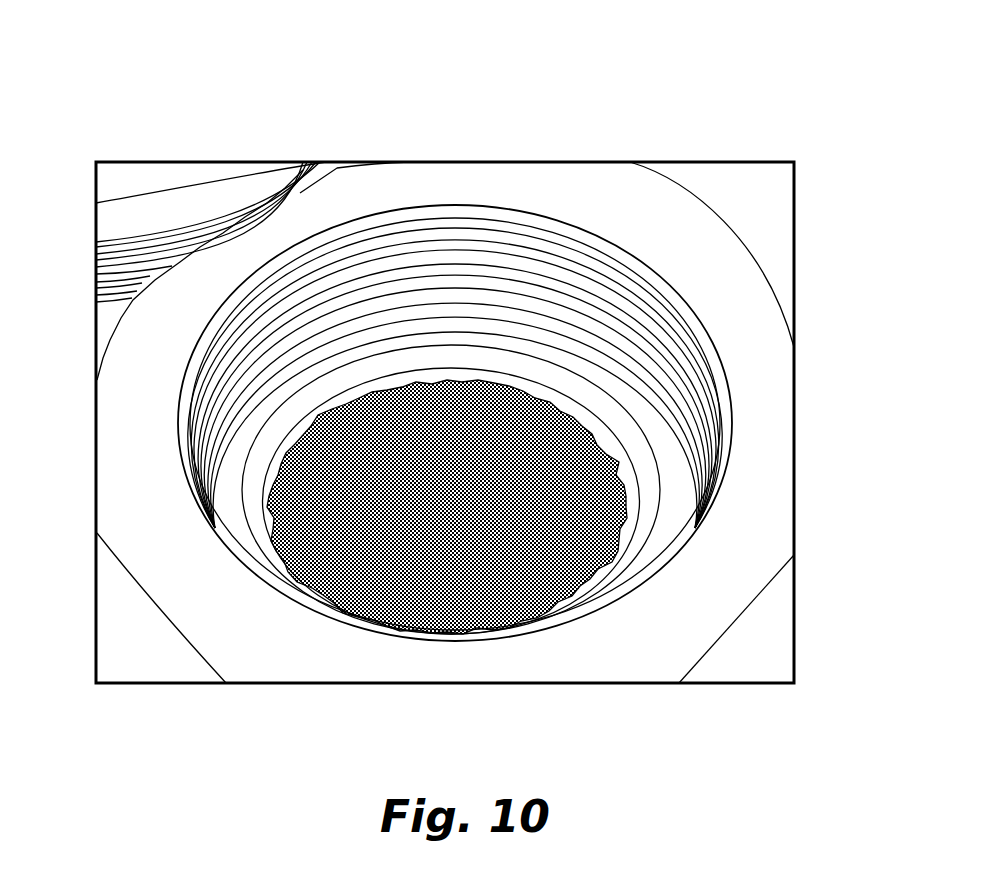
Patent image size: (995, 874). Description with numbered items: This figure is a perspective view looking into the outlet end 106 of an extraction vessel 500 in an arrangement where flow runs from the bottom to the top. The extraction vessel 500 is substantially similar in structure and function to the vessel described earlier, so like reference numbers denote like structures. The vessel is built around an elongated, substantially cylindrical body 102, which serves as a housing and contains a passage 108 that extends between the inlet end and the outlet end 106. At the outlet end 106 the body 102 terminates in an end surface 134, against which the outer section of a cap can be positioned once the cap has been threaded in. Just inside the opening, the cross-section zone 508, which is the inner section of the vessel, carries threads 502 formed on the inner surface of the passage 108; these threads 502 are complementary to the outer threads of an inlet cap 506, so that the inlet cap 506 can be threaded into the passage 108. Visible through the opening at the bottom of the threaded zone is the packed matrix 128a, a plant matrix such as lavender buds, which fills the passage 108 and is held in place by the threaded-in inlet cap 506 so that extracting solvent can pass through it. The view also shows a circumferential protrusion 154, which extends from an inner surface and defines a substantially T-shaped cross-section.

The extraction vessel 500 is at (452, 100).
The inlet cap 506 is at (153, 170).
The outlet end 106 is at (348, 160).
The cross-section zone 508 is at (473, 215).
The passage 108 is at (568, 242).
The threads 502 is at (622, 275).
The matrix 128a is at (525, 470).
The end surface 134 is at (752, 464).
The body 102 is at (753, 604).
The circumferential protrusion 154 is at (127, 270).